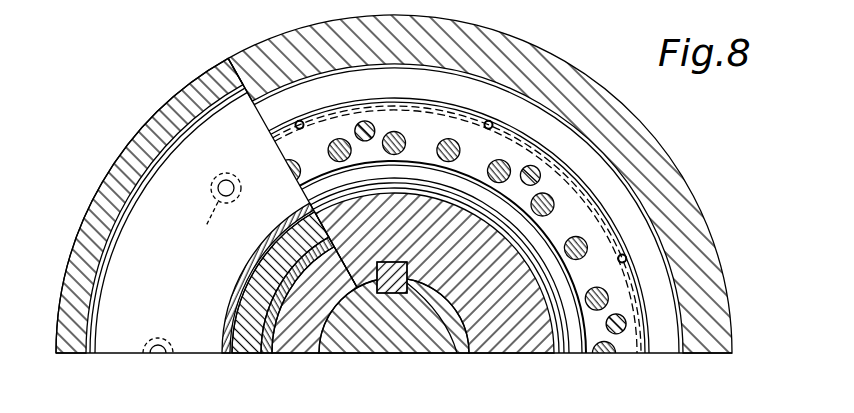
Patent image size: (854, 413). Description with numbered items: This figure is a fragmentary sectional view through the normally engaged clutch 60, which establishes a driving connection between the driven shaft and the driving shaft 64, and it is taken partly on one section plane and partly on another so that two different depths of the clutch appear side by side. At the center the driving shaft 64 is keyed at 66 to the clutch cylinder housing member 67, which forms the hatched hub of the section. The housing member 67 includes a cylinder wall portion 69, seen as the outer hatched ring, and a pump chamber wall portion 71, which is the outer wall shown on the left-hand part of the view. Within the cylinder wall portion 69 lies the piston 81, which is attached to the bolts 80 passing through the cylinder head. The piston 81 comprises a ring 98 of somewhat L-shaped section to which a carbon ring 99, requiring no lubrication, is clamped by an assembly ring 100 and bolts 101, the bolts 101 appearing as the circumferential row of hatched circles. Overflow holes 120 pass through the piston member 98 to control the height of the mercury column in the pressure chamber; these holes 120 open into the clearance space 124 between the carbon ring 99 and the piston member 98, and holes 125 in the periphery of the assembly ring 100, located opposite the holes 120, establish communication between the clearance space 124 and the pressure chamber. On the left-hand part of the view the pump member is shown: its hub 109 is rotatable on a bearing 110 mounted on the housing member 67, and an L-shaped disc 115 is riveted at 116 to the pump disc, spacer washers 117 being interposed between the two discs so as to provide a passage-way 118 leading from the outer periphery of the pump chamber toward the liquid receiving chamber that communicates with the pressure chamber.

The clutch 60 is at (135, 117).
The pump chamber wall portion 71 is at (118, 173).
The L-shaped disc 115 is at (125, 257).
The cylinder wall portion 69 is at (455, 35).
The carbon ring 99 is at (499, 102).
The assembly ring 100 is at (494, 143).
The bolts 101 is at (534, 173).
The bolts 80 is at (600, 233).
The overflow holes 120 is at (626, 253).
The holes 125 is at (625, 258).
The clearance space 124 is at (638, 318).
The ring 98 is at (530, 242).
The piston 81 is at (582, 348).
The clutch cylinder housing member 67 is at (509, 342).
The driving shaft 64 is at (412, 342).
The key 66 is at (455, 342).
The hub 109 is at (247, 350).
The bearing 110 is at (263, 354).
The passage-way 118 is at (230, 354).
The rivets 116 is at (223, 183).
The spacer washers 117 is at (213, 210).